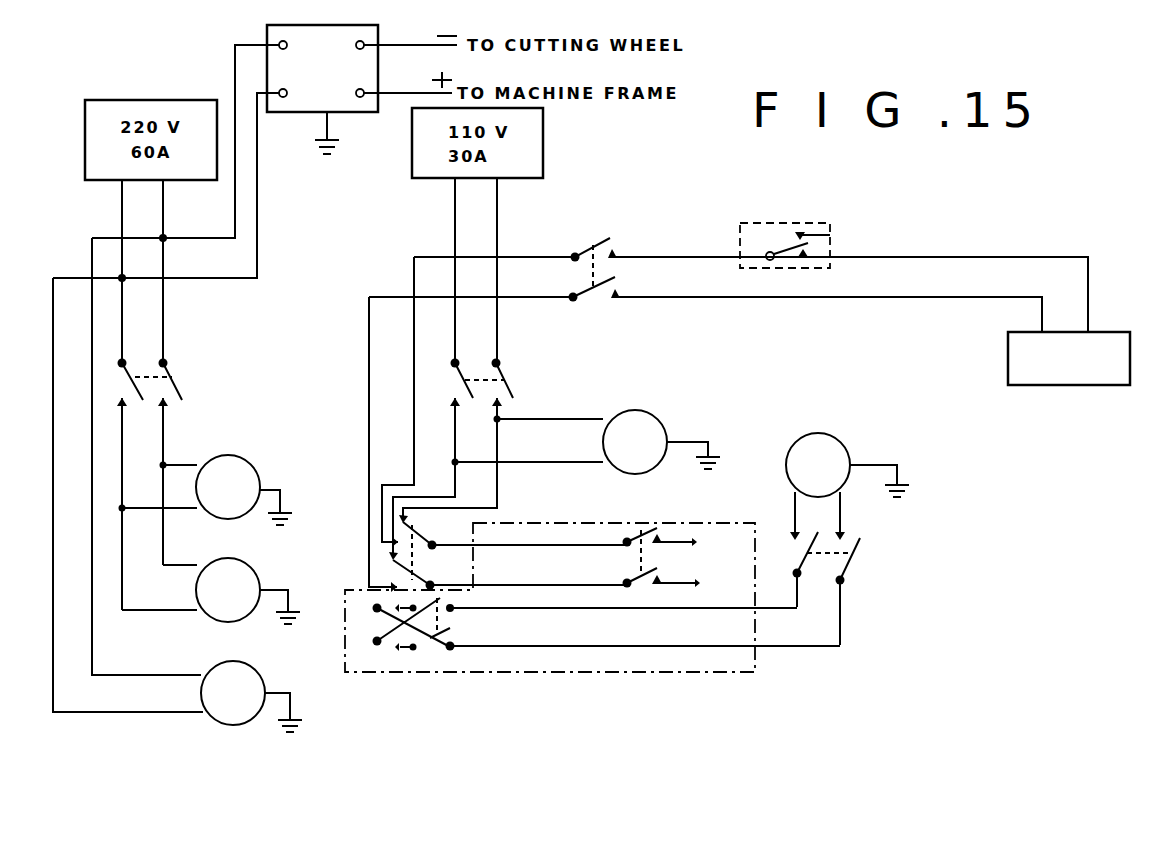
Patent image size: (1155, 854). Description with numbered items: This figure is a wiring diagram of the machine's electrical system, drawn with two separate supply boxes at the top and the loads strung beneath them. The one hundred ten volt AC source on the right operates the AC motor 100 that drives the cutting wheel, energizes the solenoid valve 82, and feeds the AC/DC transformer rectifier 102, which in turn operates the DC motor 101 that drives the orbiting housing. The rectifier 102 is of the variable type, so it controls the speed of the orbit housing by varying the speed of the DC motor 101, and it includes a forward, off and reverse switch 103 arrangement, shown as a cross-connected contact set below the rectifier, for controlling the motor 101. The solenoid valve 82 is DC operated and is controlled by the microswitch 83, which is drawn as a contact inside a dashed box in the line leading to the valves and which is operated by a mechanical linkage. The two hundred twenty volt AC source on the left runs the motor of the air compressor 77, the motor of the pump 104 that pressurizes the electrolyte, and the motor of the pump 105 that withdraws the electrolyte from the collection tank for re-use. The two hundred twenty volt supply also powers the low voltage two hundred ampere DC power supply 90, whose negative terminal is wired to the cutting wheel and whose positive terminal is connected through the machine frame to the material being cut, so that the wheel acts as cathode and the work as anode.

The DC power supply 90 is at (280, 32).
The pump 104 is at (227, 455).
The pump 105 is at (247, 563).
The air compressor 77 is at (230, 726).
The motor 100 is at (628, 410).
The DC motor 101 is at (813, 433).
The AC/DC transformer rectifier 102 is at (515, 554).
The forward, off and reverse switch 103 is at (428, 654).
The solenoid valve 82 is at (1008, 350).
The microswitch 83 is at (770, 218).